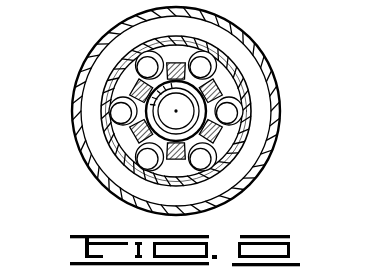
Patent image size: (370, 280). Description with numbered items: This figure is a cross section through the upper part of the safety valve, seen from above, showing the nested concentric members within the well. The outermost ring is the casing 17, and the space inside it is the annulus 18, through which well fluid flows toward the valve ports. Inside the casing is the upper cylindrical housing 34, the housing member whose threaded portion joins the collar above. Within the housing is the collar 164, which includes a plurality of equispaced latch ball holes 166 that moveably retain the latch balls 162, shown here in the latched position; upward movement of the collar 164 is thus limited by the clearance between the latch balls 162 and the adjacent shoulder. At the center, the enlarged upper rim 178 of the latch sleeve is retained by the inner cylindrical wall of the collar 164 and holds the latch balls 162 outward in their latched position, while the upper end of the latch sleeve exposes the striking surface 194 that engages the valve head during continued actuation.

The casing 17 is at (245, 40).
The annulus 18 is at (259, 113).
The upper cylindrical housing 34 is at (236, 70).
The latch ball holes 166 is at (244, 98).
The latch balls 162 is at (243, 165).
The collar 164 is at (222, 137).
The enlarged upper rim 178 is at (142, 130).
The striking surface 194 is at (134, 152).